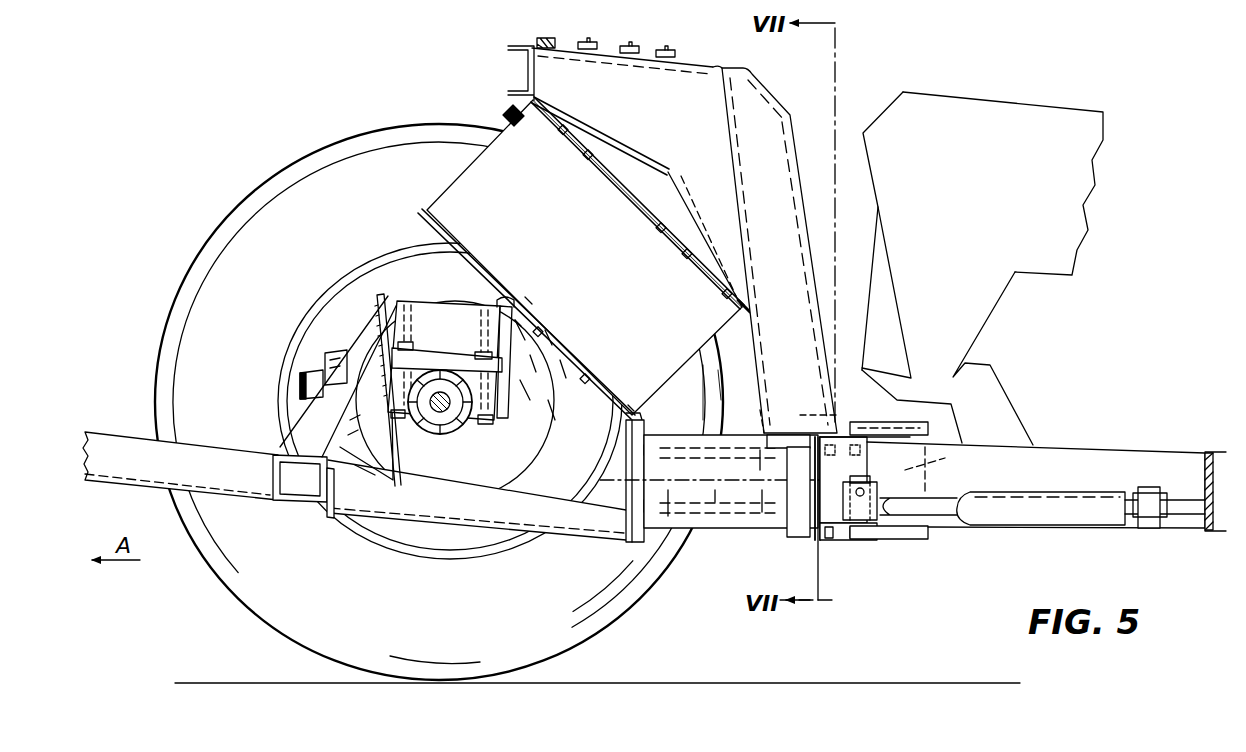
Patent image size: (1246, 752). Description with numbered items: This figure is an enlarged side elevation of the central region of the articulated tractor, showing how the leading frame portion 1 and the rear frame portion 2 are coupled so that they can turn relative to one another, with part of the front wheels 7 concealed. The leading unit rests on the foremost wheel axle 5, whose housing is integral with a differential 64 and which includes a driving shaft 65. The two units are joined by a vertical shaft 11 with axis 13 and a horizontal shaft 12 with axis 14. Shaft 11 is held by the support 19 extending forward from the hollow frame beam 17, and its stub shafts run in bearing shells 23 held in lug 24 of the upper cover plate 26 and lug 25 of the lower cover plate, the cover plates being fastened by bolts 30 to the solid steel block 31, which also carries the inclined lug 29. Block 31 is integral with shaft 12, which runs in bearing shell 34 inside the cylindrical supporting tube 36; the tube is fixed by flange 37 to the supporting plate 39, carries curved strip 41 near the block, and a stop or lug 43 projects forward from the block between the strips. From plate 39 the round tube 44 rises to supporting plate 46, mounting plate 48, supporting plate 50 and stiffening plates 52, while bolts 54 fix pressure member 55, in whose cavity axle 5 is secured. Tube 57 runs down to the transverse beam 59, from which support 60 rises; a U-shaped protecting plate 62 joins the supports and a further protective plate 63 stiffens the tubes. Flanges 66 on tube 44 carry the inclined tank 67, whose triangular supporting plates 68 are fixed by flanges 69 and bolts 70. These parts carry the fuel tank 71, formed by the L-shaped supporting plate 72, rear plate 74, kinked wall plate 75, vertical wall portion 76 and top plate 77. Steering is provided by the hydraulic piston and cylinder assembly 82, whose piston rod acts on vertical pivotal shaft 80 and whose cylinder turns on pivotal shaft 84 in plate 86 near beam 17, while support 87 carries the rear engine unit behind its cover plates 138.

The leading frame portion 1 is at (158, 490).
The rear frame portion 2 is at (1092, 212).
The foremost wheel axle 5 is at (450, 436).
The front wheels 7 is at (300, 172).
The vertical shaft 11 is at (912, 473).
The horizontal shaft 12 is at (738, 522).
The axis 13 is at (898, 416).
The axis 14 is at (763, 516).
The hollow frame beam 17 is at (1212, 452).
The support 19 is at (1108, 452).
The bearing shells 23 is at (791, 414).
The lug 24 is at (932, 430).
The lug 25 is at (900, 546).
The upper cover plate 26 is at (846, 422).
The lug 29 is at (862, 546).
The bolts 30 is at (829, 481).
The solid steel block 31 is at (836, 562).
The bearing shell 34 is at (676, 522).
The cylindrical supporting tube 36 is at (738, 428).
The flange 37 is at (648, 415).
The supporting plate 39 is at (626, 532).
The curved strip 41 is at (782, 450).
The stop or lug 43 is at (806, 536).
The round tube 44 is at (510, 402).
The supporting plate 46 is at (508, 300).
The mounting plate 48 is at (443, 352).
The supporting plate 50 is at (414, 298).
The stiffening plates 52 is at (453, 302).
The bolts 54 is at (500, 352).
The pressure member 55 is at (386, 402).
The tube 57 is at (366, 335).
The transverse beam 59 is at (276, 479).
The support 60 is at (188, 446).
The U-shaped protecting plate 62 is at (272, 508).
The further protective plate 63 is at (556, 524).
The differential 64 is at (528, 472).
The driving shaft 65 is at (437, 425).
The flanges 66 is at (552, 334).
The tank 67 is at (470, 183).
The supporting plates 68 is at (668, 192).
The flanges 69 is at (553, 126).
The bolts 70 is at (566, 142).
The fuel tank 71 is at (682, 50).
The L-shaped supporting plate 72 is at (750, 250).
The plate 74 is at (797, 179).
The wall plate 75 is at (653, 150).
The vertical wall portion 76 is at (548, 76).
The top plate 77 is at (630, 62).
The vertical pivotal shaft 80 is at (866, 488).
The hydraulic piston and cylinder assembly 82 is at (1018, 530).
The pivotal shaft 84 is at (1147, 528).
The plate 86 is at (1188, 494).
The support 87 is at (998, 382).
The cover plates 138 is at (1000, 102).